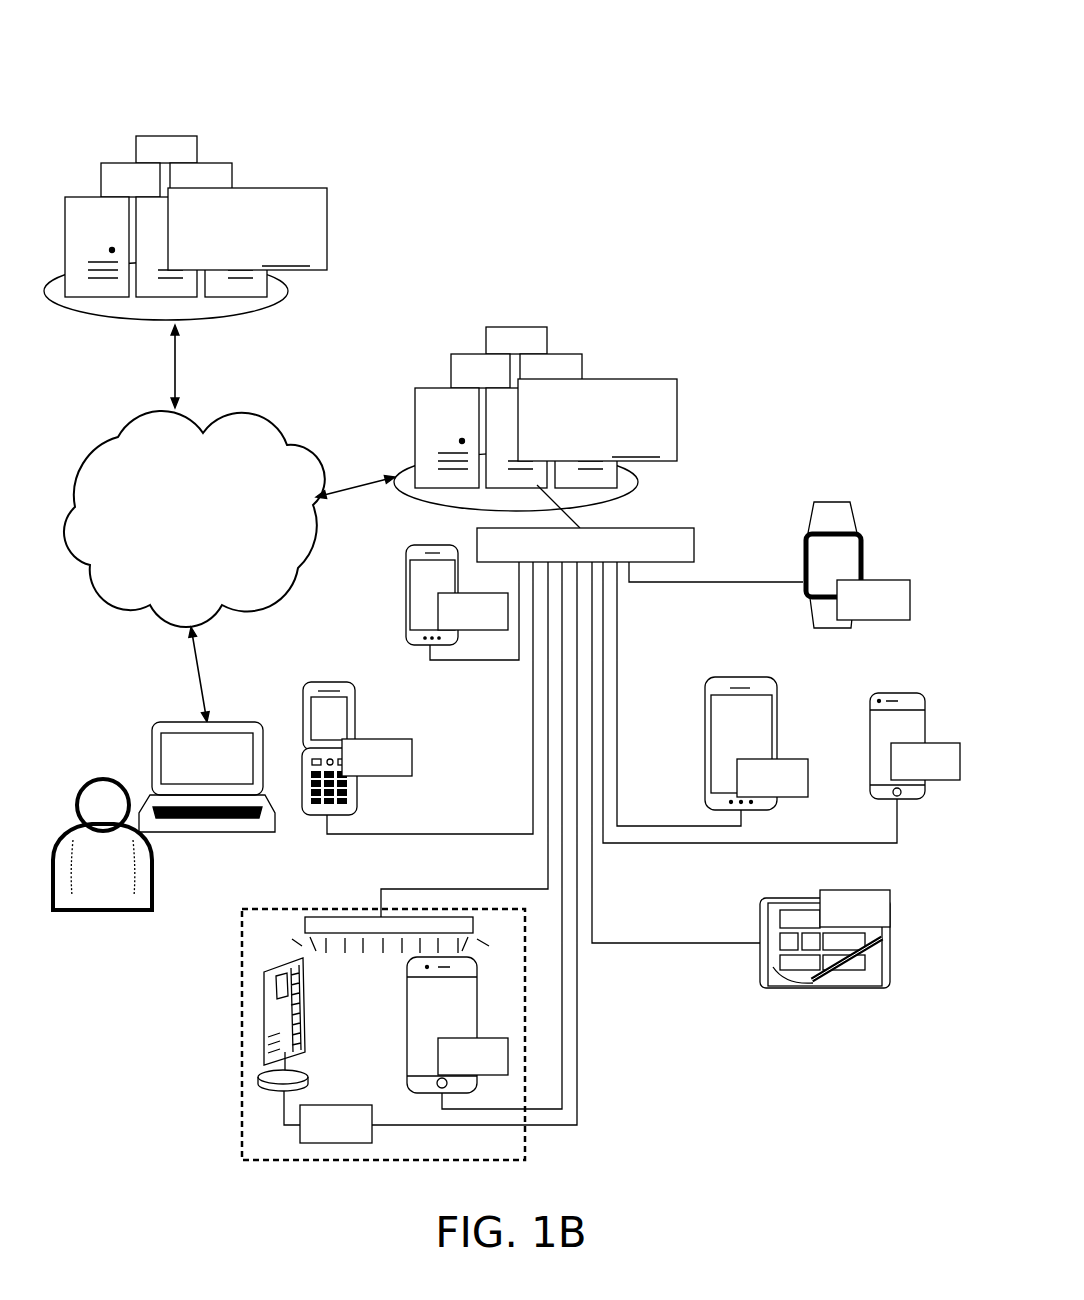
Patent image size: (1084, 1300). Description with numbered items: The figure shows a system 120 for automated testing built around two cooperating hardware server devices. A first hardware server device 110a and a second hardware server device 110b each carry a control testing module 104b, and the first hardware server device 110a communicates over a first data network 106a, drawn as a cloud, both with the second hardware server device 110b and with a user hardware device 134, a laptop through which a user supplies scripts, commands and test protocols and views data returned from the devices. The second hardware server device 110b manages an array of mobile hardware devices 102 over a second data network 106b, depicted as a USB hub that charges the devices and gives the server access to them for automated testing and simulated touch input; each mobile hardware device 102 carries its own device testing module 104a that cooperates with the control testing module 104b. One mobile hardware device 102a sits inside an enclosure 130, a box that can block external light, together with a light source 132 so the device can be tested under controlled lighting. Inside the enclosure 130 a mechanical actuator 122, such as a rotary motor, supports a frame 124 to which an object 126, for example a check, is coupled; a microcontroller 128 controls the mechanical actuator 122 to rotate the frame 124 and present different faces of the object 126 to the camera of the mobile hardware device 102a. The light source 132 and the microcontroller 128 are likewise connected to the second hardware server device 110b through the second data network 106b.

The system for automated testing 120 is at (502, 586).
The first hardware server device 110a is at (130, 144).
The second hardware server device 110b is at (483, 335).
The control testing module 104b is at (422, 324).
The first data network 106a is at (170, 543).
The second data network 106b is at (639, 557).
The mobile hardware device 102 is at (405, 562).
The device testing module 104a is at (448, 623).
The user hardware device 134 is at (150, 740).
The enclosure 130 is at (242, 940).
The light source 132 is at (365, 922).
The frame 124 is at (272, 965).
The object 126 is at (265, 1030).
The mechanical actuator 122 is at (262, 1082).
The microcontroller 128 is at (318, 1135).
The mobile hardware device under test 102a is at (407, 1008).